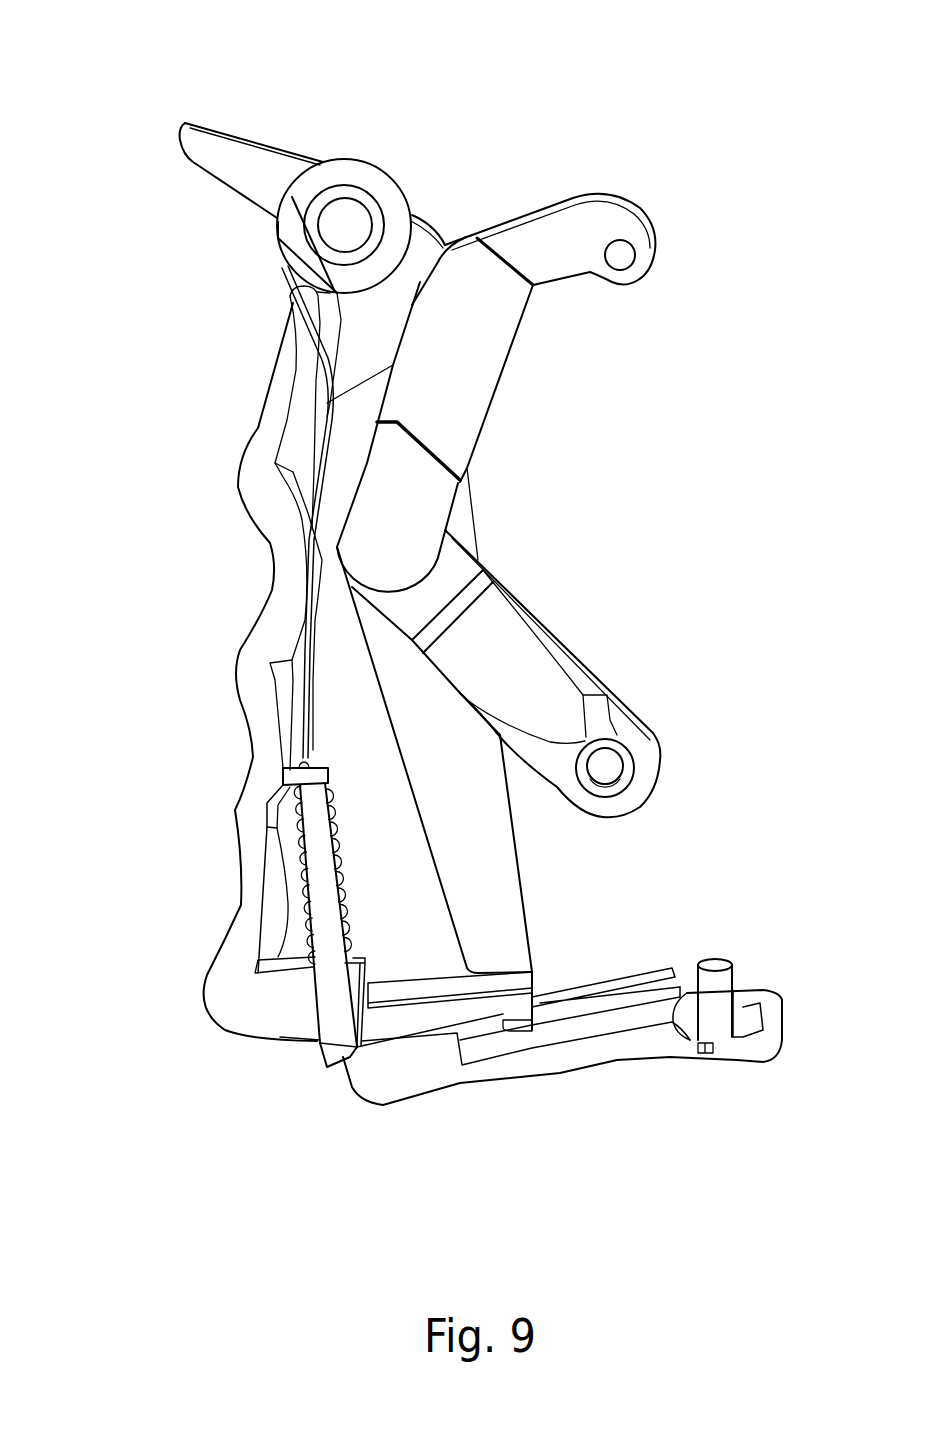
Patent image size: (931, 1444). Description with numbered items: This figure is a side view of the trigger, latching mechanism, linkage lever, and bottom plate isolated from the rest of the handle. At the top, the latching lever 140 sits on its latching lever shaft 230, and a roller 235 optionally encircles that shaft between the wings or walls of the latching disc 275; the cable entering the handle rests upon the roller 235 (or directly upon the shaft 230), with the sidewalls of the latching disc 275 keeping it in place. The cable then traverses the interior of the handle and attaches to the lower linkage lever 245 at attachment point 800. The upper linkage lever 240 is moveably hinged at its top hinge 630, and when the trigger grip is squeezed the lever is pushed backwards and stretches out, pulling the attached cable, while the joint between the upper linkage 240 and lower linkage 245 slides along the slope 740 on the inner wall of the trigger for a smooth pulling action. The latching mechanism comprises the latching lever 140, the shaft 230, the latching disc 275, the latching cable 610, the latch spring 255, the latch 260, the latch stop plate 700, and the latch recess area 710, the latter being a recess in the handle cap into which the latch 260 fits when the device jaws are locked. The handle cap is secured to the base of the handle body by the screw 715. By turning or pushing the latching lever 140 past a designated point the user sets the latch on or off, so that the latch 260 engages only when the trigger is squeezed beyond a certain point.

The latching lever 140 is at (232, 118).
The latching lever shaft 230 is at (345, 227).
The roller 235 is at (372, 232).
The linkage lever 240 is at (452, 392).
The lower linkage lever 245 is at (508, 663).
The latch spring 255 is at (300, 858).
The latch 260 is at (332, 1045).
The latching disc 275 is at (342, 177).
The latching cable 610 is at (310, 665).
The top hinge 630 is at (610, 227).
The latch stop plate 700 is at (307, 777).
The latch recess area 710 is at (481, 1050).
The screw 715 is at (707, 1053).
The slope 740 is at (300, 858).
The attachment point 800 is at (605, 760).